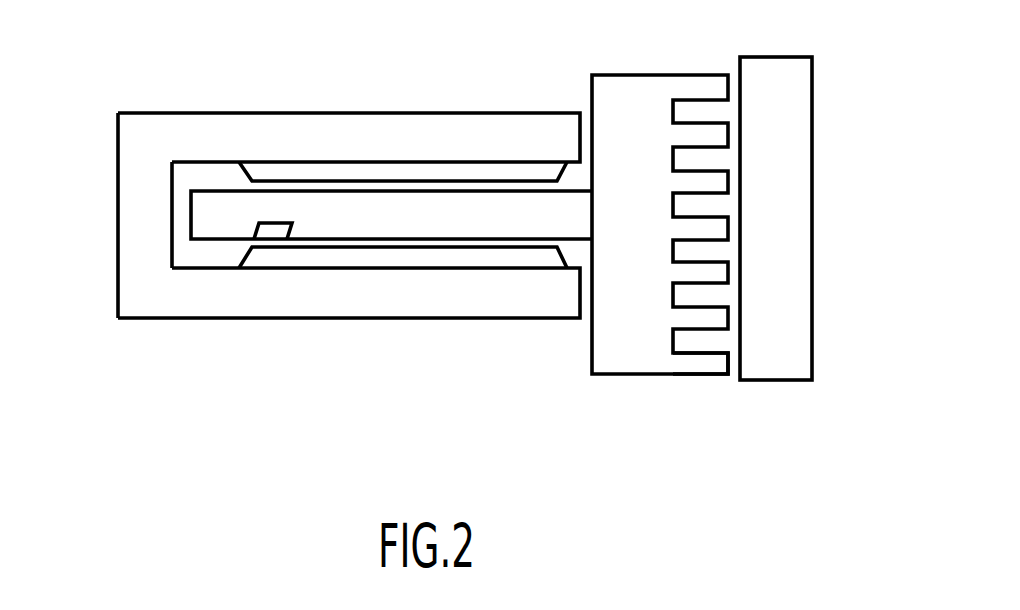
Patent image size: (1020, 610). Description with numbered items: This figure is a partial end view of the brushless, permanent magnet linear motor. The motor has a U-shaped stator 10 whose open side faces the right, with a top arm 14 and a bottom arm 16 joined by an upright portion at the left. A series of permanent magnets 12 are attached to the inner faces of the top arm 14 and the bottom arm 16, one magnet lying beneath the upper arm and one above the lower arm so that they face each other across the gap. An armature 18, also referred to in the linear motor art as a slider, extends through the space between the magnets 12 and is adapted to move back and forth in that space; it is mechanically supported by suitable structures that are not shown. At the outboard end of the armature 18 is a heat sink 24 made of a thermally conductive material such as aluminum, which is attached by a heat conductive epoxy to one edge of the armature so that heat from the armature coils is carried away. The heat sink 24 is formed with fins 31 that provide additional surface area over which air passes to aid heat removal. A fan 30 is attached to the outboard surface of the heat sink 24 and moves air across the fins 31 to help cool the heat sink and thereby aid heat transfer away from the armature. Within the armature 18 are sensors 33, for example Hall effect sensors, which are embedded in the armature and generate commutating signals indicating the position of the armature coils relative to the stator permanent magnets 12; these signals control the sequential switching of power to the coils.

The stator 10 is at (305, 214).
The permanent magnets 12 is at (447, 168).
The top arm 14 is at (400, 123).
The bottom arm 16 is at (348, 307).
The armature 18 is at (391, 215).
The heat sink 24 is at (638, 80).
The fan 30 is at (793, 345).
The fins 31 is at (692, 364).
The sensors 33 is at (272, 224).